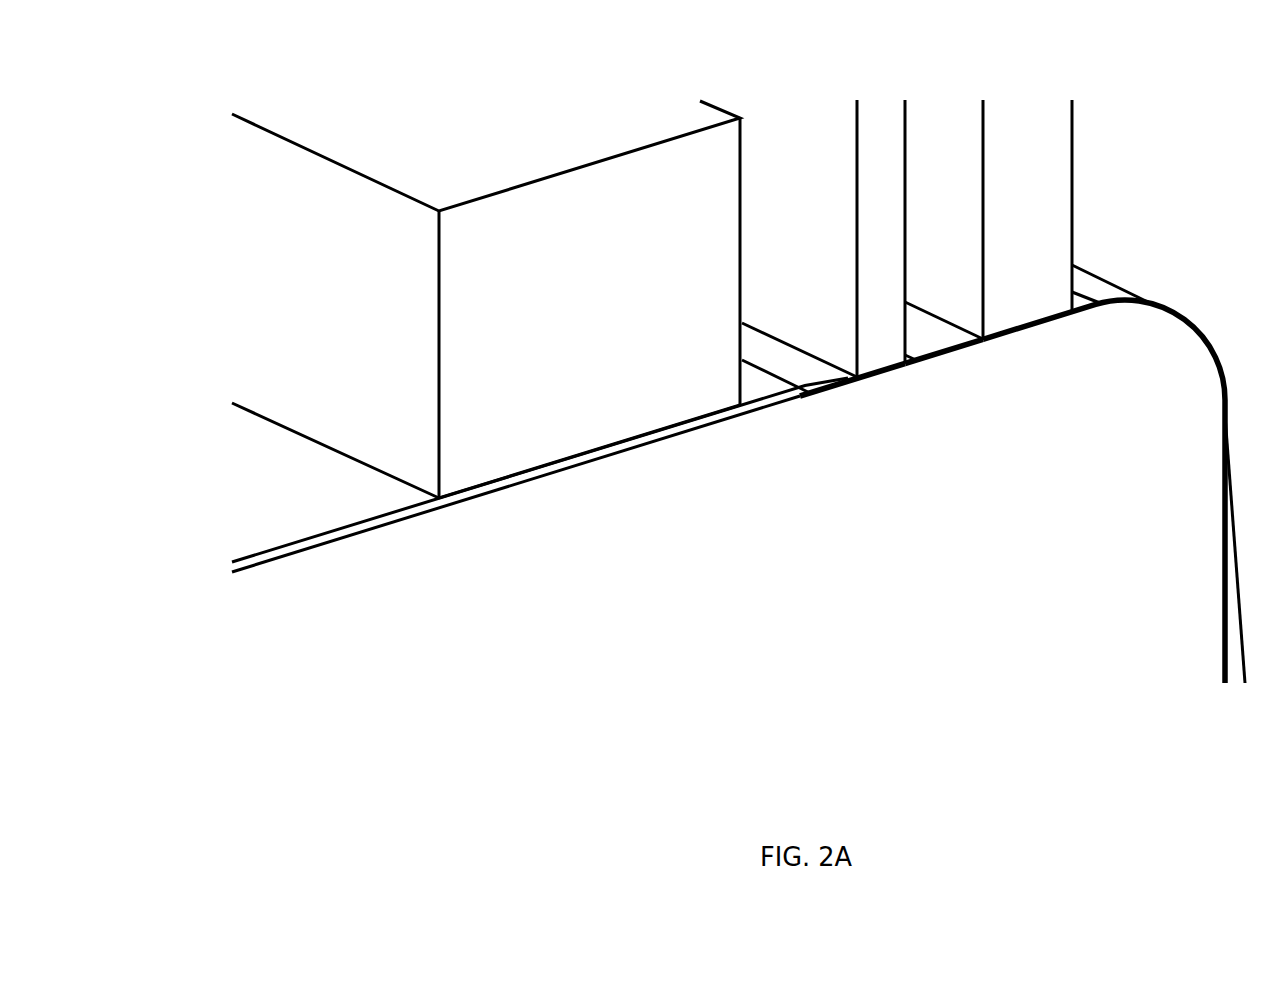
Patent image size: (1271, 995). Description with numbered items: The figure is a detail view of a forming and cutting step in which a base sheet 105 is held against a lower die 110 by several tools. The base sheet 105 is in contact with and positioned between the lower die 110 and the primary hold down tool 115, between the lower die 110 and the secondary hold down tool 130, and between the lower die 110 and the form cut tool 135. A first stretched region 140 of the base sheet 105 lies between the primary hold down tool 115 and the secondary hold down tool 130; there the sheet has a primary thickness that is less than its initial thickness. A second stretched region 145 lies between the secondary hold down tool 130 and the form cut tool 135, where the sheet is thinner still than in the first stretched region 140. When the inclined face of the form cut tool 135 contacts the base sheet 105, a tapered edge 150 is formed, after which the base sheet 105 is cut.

The base sheet 105 is at (292, 552).
The lower die 110 is at (570, 617).
The primary hold down tool 115 is at (615, 291).
The secondary hold down tool 130 is at (898, 236).
The form cut tool 135 is at (1044, 185).
The first stretched region 140 is at (812, 397).
The second stretched region 145 is at (955, 350).
The tapered edge 150 is at (1040, 330).